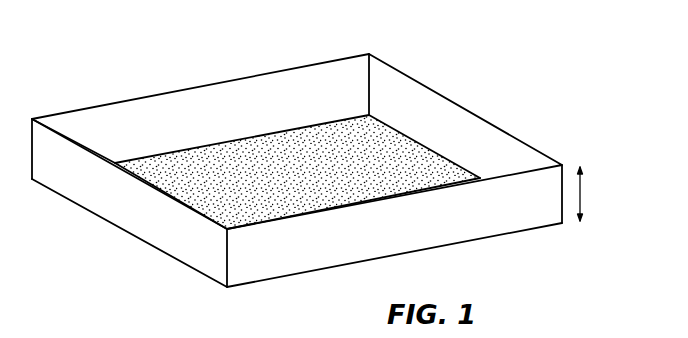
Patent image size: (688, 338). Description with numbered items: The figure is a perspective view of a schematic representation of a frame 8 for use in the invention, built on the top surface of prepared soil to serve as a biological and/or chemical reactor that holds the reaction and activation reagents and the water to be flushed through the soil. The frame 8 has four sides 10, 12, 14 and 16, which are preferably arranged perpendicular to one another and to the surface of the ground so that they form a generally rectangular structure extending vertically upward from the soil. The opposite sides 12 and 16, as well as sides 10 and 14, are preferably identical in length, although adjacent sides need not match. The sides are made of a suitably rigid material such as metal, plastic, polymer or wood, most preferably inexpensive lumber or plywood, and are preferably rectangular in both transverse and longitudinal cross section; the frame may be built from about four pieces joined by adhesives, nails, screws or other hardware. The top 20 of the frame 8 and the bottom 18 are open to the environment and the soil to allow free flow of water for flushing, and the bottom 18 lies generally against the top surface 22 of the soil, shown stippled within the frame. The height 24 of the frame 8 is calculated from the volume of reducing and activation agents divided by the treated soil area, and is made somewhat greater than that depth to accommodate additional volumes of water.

The frame 8 is at (123, 65).
The side 10 is at (459, 105).
The side 12 is at (446, 224).
The side 14 is at (128, 211).
The side 16 is at (227, 80).
The bottom 18 is at (173, 259).
The top 20 is at (425, 73).
The top surface 22 is at (305, 163).
The height 24 is at (581, 192).